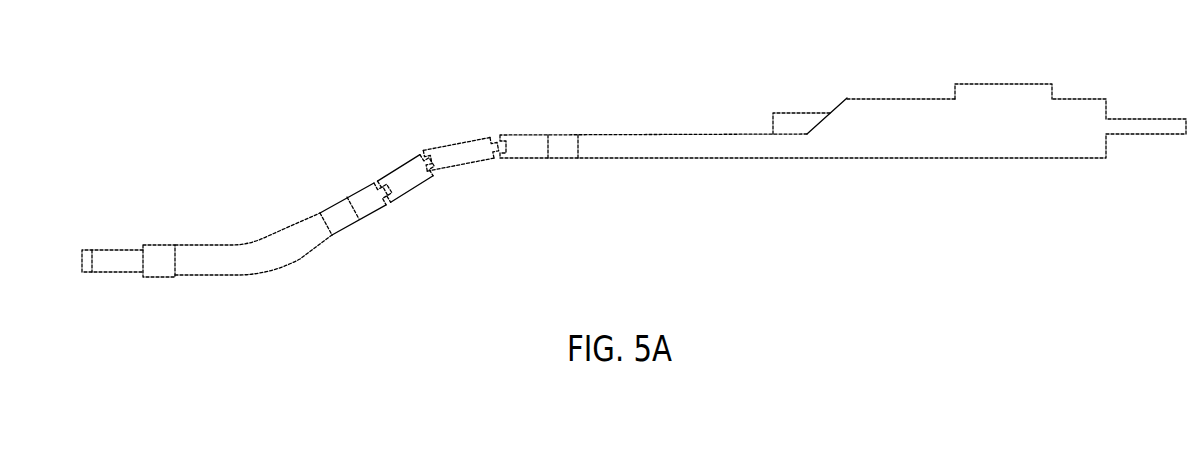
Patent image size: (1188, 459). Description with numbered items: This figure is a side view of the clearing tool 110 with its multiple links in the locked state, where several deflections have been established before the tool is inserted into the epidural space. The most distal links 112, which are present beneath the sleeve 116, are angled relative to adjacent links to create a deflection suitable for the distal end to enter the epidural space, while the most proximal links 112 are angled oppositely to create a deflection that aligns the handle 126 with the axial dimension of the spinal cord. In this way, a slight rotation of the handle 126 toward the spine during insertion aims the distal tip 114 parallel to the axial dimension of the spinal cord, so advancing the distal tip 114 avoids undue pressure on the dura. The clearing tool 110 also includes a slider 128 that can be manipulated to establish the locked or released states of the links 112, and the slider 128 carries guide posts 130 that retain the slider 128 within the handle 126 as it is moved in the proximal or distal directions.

The clearing tool 110 is at (436, 80).
The links 112 is at (407, 181).
The distal tip 114 is at (110, 248).
The sleeve 116 is at (205, 244).
The handle 126 is at (925, 150).
The slider 128 is at (986, 83).
The guide posts 130 is at (779, 112).